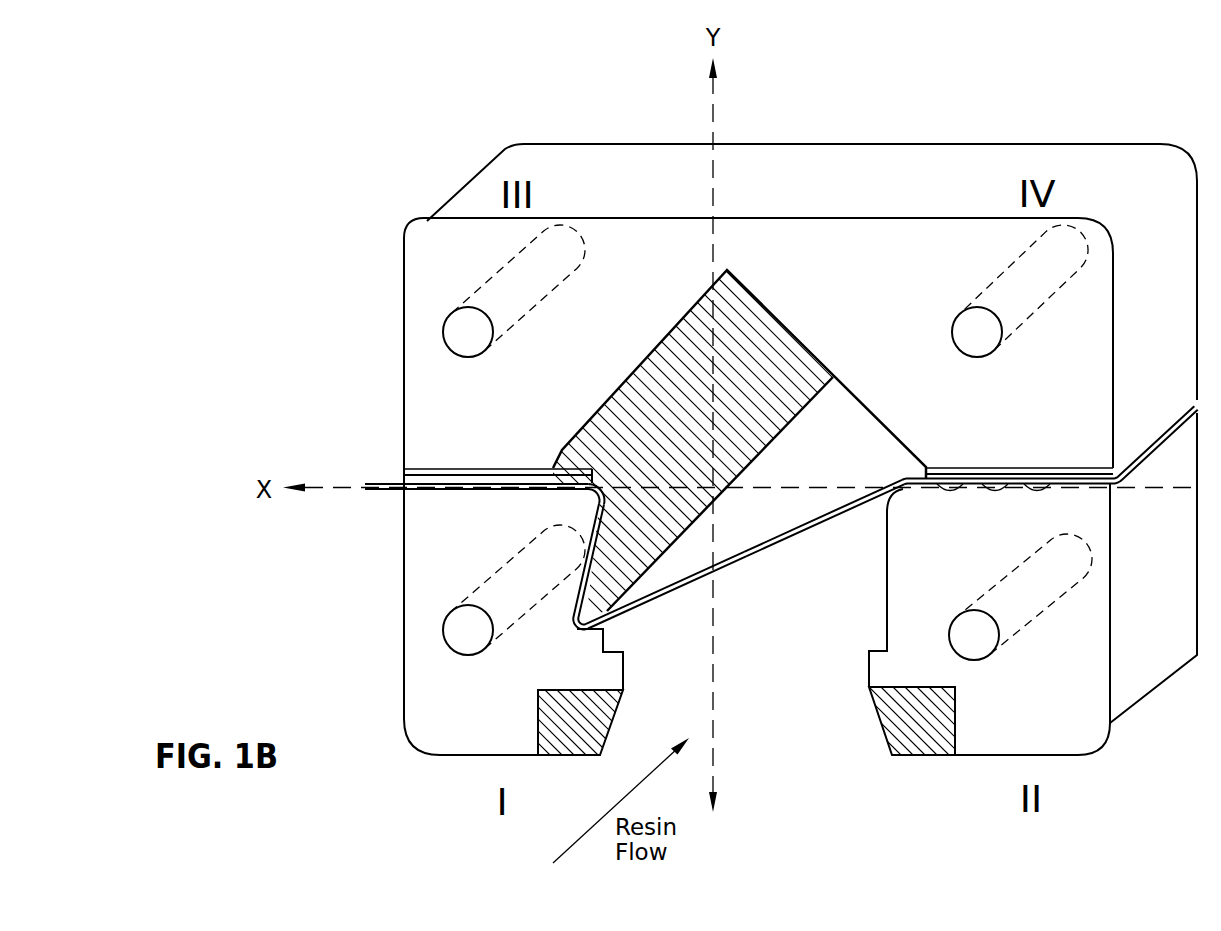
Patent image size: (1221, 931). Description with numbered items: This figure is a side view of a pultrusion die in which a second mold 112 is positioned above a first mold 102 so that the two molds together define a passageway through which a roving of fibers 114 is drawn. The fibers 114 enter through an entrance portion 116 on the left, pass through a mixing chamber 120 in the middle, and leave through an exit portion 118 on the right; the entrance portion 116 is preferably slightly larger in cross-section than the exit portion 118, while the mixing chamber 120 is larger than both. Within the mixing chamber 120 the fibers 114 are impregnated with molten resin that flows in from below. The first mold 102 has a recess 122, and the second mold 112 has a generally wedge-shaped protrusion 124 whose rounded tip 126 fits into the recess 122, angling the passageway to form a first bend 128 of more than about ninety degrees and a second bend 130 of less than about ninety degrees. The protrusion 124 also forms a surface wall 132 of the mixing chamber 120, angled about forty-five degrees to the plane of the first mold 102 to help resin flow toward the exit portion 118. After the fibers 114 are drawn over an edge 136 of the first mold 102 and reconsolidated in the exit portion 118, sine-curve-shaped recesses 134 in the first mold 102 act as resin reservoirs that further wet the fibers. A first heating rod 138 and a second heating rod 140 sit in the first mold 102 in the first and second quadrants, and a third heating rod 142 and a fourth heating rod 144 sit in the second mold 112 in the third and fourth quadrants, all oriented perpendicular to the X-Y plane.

The first mold 102 is at (402, 619).
The second mold 112 is at (402, 239).
The roving of fibers 114 is at (374, 491).
The entrance portion 116 is at (468, 468).
The exit portion 118 is at (1032, 467).
The mixing chamber 120 is at (788, 478).
The recess 122 is at (566, 620).
The protrusion 124 is at (688, 583).
The rounded tip 126 is at (618, 612).
The first bend 128 is at (598, 496).
The second bend 130 is at (578, 631).
The surface wall 132 is at (708, 503).
The recesses 134 is at (949, 497).
The edge 136 is at (897, 493).
The first heating rod 138 is at (468, 652).
The second heating rod 140 is at (977, 660).
The third heating rod 142 is at (468, 355).
The fourth heating rod 144 is at (977, 355).